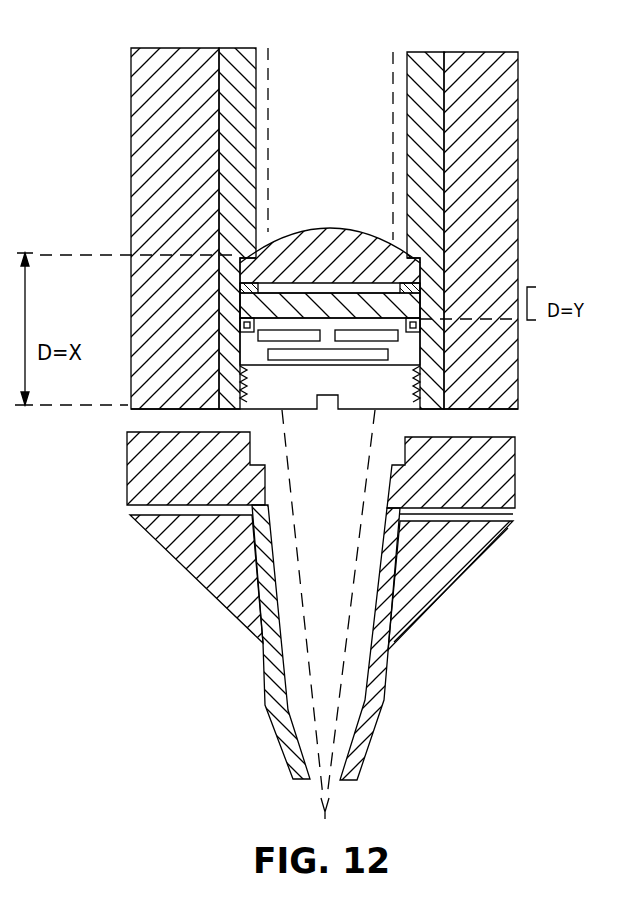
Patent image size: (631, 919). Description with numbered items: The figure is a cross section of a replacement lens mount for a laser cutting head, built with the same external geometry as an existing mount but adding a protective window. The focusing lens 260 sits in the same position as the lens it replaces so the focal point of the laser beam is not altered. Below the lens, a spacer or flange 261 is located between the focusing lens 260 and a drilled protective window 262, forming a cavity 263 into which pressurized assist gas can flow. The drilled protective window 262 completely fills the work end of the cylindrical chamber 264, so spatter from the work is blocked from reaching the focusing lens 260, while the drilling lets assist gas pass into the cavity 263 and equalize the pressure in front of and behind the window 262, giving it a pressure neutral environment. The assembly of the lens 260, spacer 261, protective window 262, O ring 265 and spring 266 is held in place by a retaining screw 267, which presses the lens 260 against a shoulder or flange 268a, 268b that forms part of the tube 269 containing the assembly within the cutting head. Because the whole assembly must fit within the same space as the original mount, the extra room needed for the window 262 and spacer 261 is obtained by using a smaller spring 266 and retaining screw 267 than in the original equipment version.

The focusing lens 260 is at (383, 237).
The spacer or flange 261 is at (245, 290).
The drilled protective window 262 is at (418, 328).
The cavity 263 is at (300, 292).
The cylindrical chamber 264 is at (328, 614).
The O ring 265 is at (420, 362).
The spring 266 is at (253, 353).
The retaining screw 267 is at (388, 396).
The shoulder or flange 268a is at (250, 262).
The shoulder or flange 268b is at (420, 268).
The tube 269 is at (430, 52).